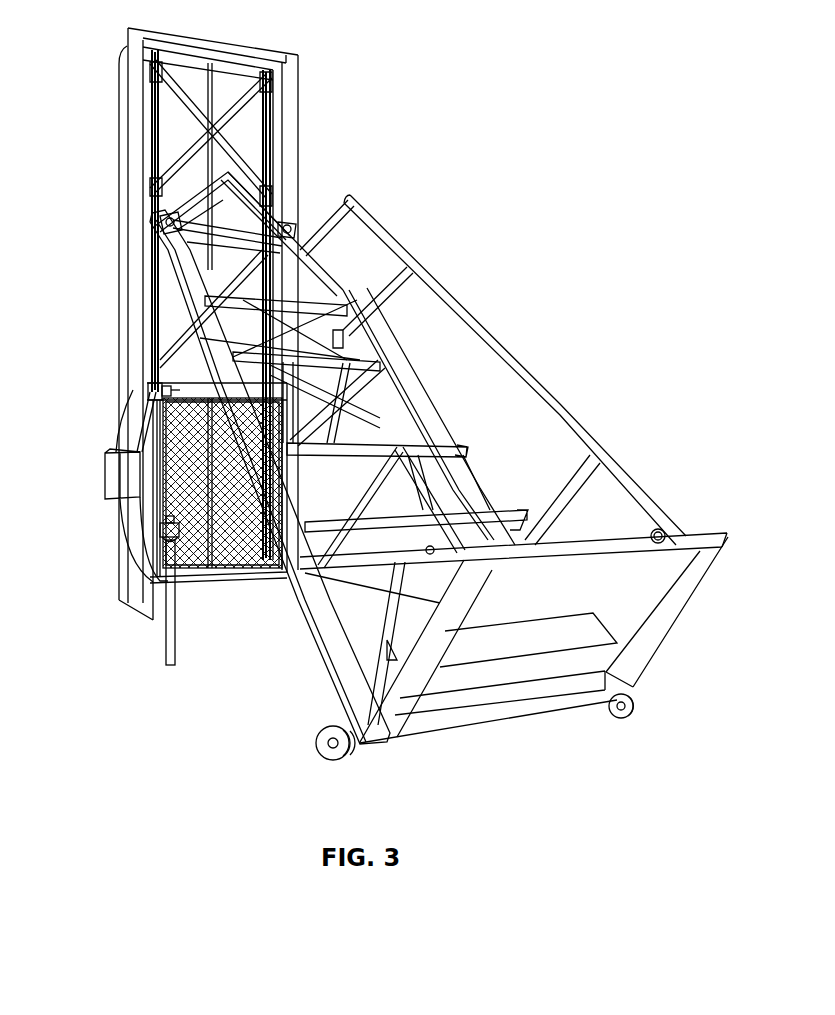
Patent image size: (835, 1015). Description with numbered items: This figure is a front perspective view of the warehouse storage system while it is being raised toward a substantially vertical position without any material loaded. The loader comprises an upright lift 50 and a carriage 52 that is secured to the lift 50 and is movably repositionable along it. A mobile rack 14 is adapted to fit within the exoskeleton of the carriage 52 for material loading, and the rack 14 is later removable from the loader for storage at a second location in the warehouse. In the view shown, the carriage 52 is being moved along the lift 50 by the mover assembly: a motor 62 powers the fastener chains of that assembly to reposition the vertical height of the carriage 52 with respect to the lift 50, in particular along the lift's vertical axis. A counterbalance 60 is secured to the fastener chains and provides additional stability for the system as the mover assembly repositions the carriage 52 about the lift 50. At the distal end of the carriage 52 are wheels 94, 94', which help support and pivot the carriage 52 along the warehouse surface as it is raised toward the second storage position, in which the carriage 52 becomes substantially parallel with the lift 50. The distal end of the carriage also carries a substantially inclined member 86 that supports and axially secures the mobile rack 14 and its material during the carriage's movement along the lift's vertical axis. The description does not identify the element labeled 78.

The mobile rack 14 is at (427, 268).
The lift 50 is at (125, 73).
The carriage 52 is at (186, 310).
The counterbalance 60 is at (146, 397).
The motor 62 is at (105, 471).
The support leg 78 is at (187, 580).
The inclined member 86 is at (660, 627).
The wheel 94 is at (290, 742).
The wheel 94' is at (671, 720).